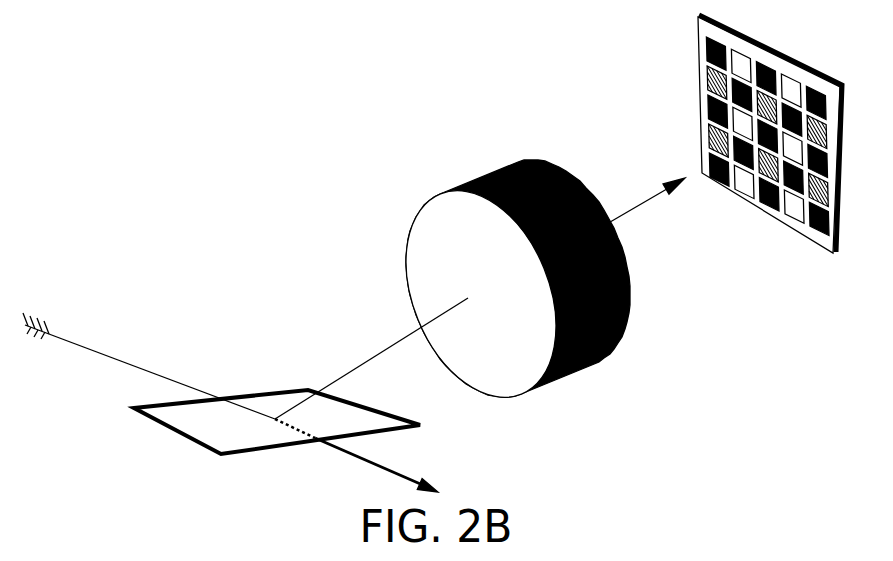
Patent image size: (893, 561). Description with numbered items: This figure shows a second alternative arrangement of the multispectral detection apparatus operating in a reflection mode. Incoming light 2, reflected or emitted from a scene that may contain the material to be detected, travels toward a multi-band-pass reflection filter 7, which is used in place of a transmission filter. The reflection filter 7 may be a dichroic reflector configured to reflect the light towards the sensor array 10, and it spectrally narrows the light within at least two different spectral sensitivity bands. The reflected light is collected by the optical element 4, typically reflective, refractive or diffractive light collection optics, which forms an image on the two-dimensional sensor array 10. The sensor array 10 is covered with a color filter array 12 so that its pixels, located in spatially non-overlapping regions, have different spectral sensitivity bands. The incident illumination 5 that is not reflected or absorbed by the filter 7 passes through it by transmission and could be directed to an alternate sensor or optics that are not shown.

The incoming light 2 is at (131, 364).
The optical element 4 is at (490, 173).
The incident illumination 5 is at (382, 465).
The multi-band-pass reflection filter 7 is at (270, 392).
The sensor array 10 is at (747, 134).
The color filter array 12 is at (735, 95).